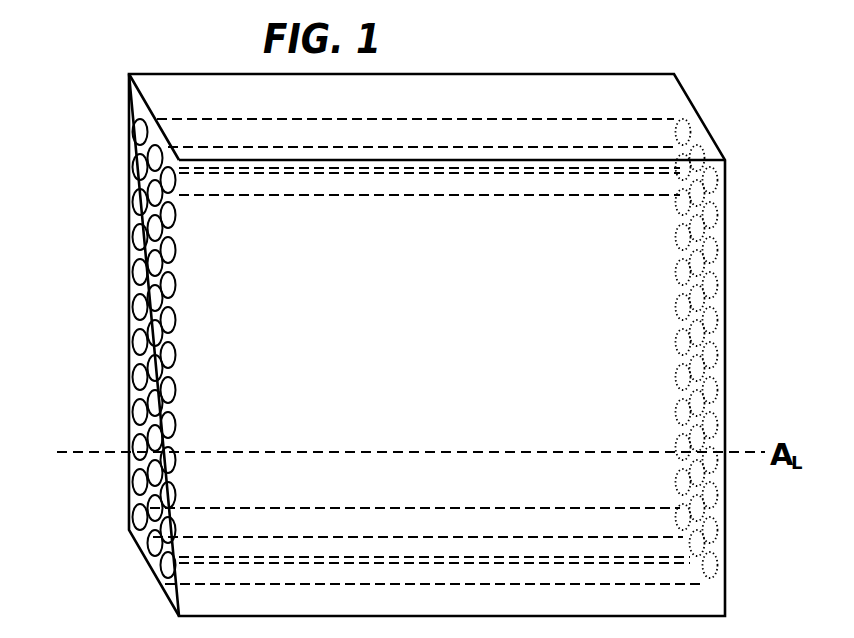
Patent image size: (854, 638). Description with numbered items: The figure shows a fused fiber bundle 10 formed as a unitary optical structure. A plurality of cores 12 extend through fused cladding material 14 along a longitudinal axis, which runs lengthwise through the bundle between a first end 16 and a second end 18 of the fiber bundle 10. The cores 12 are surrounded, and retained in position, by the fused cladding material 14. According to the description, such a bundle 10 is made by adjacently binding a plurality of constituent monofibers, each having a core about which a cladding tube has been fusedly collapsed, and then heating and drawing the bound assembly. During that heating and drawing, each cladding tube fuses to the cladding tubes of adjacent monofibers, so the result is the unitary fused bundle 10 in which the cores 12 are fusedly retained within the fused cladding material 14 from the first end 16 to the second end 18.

The fused fiber bundle 10 is at (447, 358).
The cores 12 is at (128, 270).
The fused cladding material 14 is at (130, 402).
The first end 16 is at (135, 502).
The second end 18 is at (725, 403).